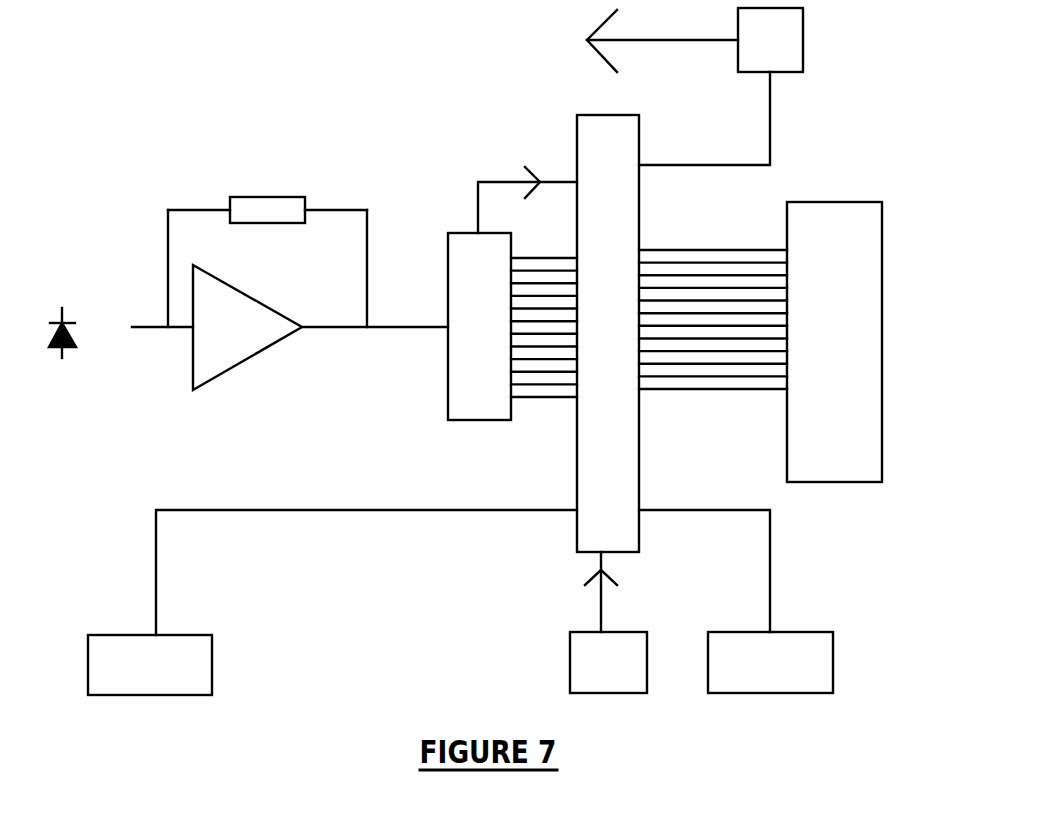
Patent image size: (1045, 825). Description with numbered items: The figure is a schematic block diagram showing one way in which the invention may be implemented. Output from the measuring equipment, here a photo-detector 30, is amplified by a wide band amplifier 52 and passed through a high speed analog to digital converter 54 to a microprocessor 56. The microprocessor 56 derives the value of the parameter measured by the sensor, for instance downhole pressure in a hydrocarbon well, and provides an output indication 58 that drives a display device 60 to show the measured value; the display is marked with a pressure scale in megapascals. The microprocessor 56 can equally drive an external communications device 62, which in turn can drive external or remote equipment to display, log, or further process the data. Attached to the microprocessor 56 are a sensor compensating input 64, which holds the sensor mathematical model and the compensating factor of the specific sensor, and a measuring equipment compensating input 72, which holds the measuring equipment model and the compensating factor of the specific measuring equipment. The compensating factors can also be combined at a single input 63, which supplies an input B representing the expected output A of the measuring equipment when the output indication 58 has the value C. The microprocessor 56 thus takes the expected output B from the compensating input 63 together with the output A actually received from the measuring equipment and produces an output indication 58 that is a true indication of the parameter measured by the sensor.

The photo-detector 30 is at (73, 345).
The wide band amplifier 52 is at (271, 323).
The high speed analog to digital converter 54 is at (490, 373).
The microprocessor 56 is at (593, 428).
The output indication 58 is at (708, 322).
The display device 60 is at (865, 472).
The external communications device 62 is at (782, 38).
The single input 63 is at (613, 663).
The sensor compensating input 64 is at (187, 667).
The measuring equipment compensating input 72 is at (812, 663).
The output actually received from the measuring equipment A is at (513, 182).
The expected output of the measuring equipment B is at (600, 618).
The value of the output indication C is at (703, 285).